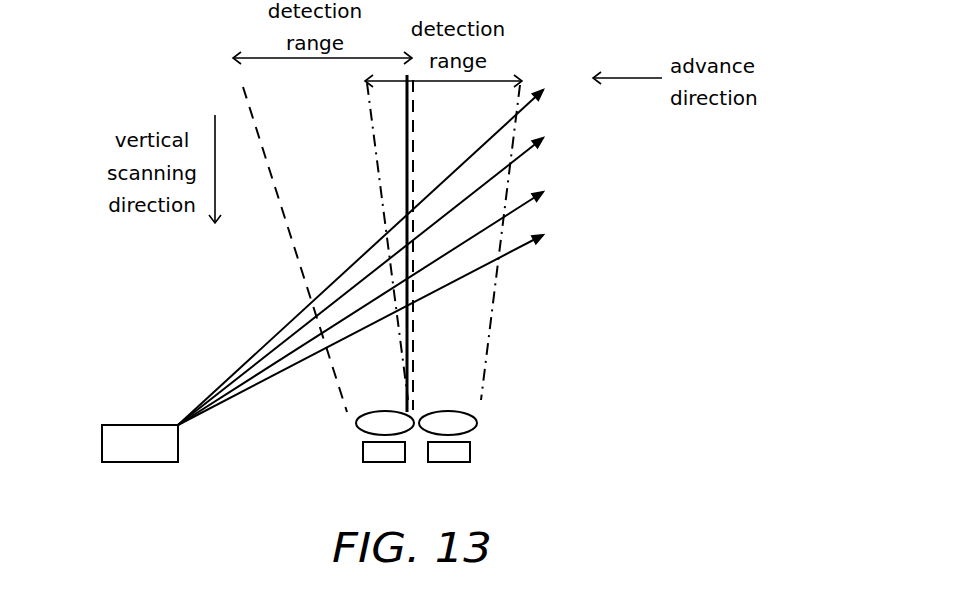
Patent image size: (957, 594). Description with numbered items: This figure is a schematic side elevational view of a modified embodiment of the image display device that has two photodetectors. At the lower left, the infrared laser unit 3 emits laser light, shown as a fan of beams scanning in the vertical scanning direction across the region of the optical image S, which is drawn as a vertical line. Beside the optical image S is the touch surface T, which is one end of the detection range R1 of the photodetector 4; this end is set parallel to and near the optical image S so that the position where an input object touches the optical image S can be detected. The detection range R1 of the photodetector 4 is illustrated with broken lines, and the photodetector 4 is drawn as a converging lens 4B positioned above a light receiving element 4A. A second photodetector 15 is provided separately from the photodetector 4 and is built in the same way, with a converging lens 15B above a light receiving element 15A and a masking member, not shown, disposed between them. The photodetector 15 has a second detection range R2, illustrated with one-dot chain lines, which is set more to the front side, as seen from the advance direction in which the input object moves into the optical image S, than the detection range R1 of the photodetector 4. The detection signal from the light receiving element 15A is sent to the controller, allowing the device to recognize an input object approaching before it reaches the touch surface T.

The infrared laser unit 3 is at (102, 445).
The photodetector 4 is at (328, 438).
The light receiving element 4A is at (363, 452).
The converging lens 4B is at (356, 424).
The photodetector 15 is at (517, 436).
The light receiving element 15A is at (470, 451).
The converging lens 15B is at (477, 423).
The optical image S is at (405, 120).
The touch surface T is at (417, 149).
The detection range R1 is at (285, 226).
The detection range R2 is at (497, 268).